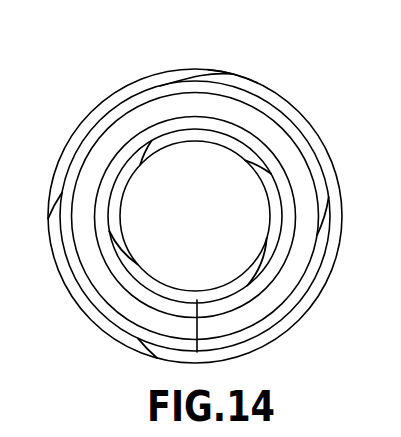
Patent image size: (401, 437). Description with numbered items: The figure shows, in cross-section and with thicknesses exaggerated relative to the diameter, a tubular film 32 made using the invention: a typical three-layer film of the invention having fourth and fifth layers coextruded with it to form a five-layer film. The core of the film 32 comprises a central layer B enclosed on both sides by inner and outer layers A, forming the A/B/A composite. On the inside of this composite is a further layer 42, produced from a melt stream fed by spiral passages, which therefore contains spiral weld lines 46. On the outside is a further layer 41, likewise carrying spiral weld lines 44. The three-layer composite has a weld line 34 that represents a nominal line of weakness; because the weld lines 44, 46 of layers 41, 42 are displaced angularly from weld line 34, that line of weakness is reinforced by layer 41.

The tubular film 32 is at (163, 80).
The spiral weld lines 44 is at (232, 79).
The outer layer 41 is at (83, 130).
The inner and outer layers A is at (283, 124).
The central layer B is at (292, 167).
The inner layer 42 is at (268, 252).
The spiral weld lines 46 is at (125, 258).
The weld line 34 is at (198, 325).